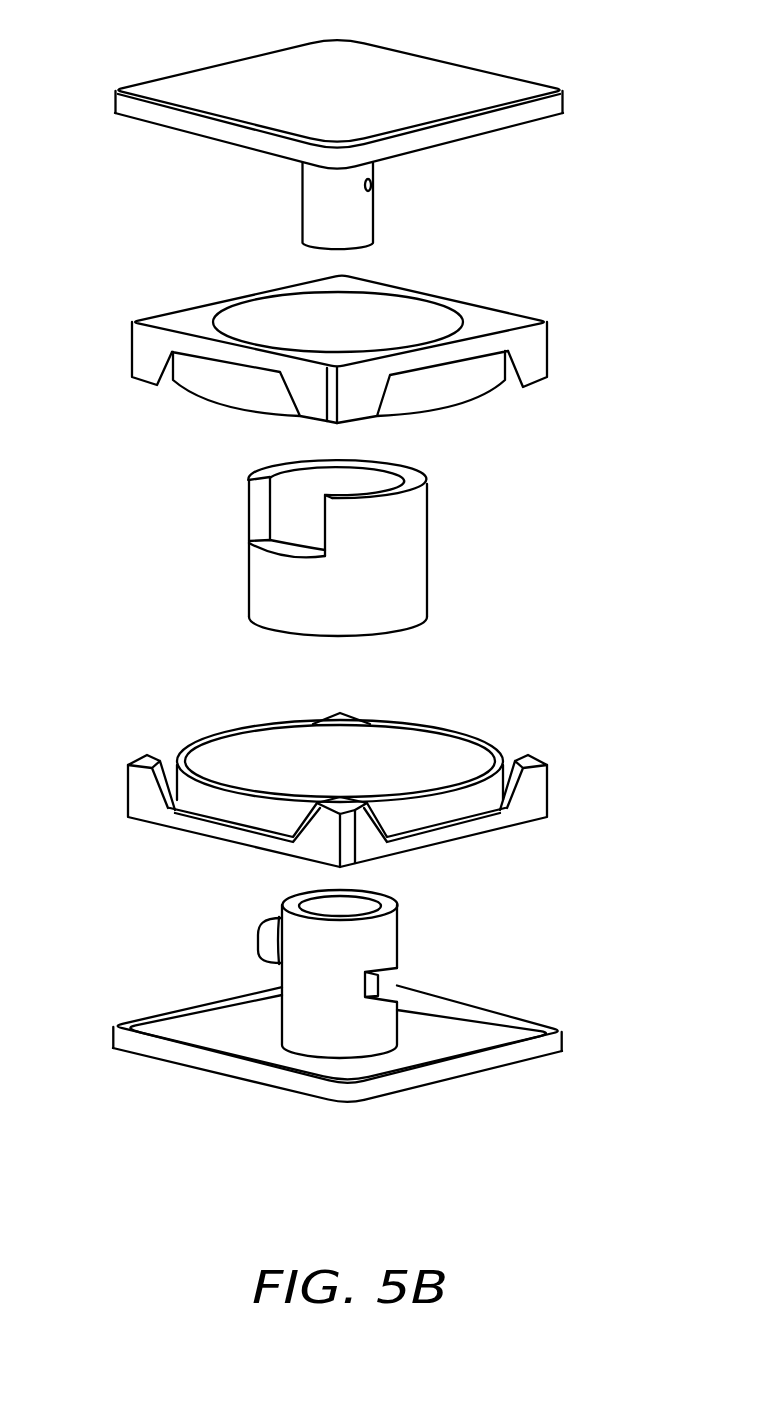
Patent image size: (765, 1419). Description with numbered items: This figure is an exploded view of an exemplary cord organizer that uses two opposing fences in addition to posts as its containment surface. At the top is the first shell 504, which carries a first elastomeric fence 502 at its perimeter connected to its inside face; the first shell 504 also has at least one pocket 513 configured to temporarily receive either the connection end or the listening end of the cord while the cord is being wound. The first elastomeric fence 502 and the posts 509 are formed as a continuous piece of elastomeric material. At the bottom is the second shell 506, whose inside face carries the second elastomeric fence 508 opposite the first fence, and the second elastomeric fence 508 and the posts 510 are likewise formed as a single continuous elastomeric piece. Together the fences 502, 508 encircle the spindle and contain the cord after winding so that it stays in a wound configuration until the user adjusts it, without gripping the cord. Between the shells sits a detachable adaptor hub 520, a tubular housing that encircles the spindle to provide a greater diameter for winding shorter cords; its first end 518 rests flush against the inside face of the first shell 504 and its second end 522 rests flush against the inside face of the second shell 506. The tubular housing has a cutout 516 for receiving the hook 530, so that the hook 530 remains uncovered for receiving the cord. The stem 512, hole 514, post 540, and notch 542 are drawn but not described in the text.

The first elastomeric fence 502 is at (203, 388).
The first shell 504 is at (170, 70).
The second shell 506 is at (212, 1068).
The second elastomeric fence 508 is at (232, 752).
The posts 509 is at (358, 390).
The posts 510 is at (323, 832).
The stem 512 is at (300, 182).
The pocket 513 is at (468, 127).
The hole 514 is at (375, 187).
The cutout 516 is at (293, 515).
The first end 518 is at (427, 500).
The detachable adaptor hub 520 is at (263, 590).
The second end 522 is at (427, 617).
The hook 530 is at (257, 937).
The post 540 is at (398, 922).
The notch 542 is at (393, 978).